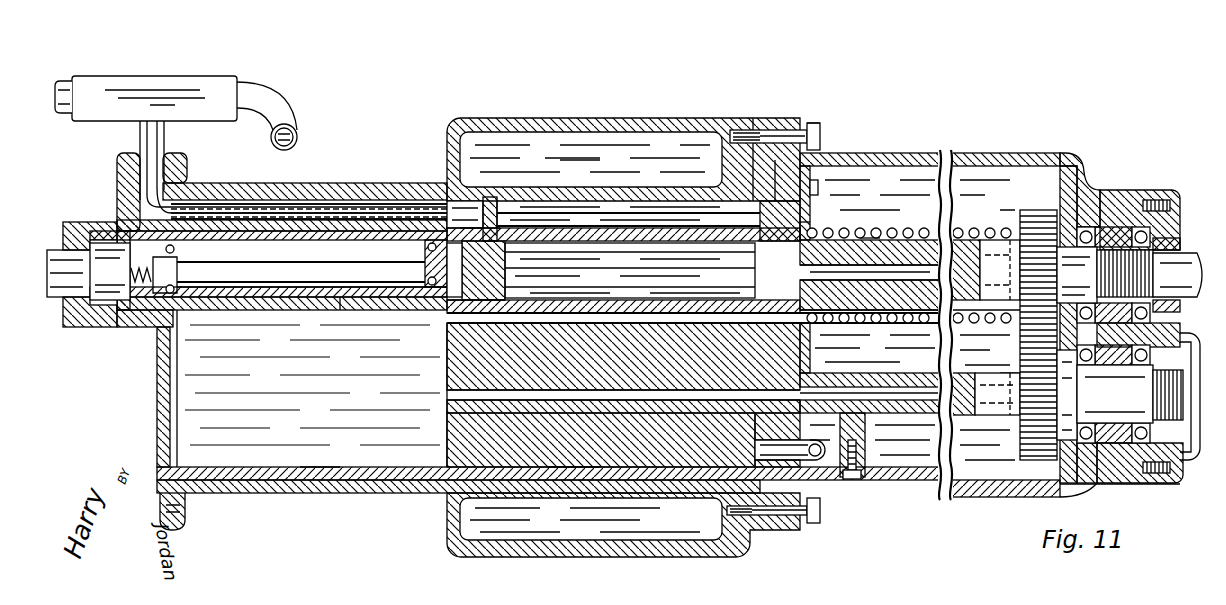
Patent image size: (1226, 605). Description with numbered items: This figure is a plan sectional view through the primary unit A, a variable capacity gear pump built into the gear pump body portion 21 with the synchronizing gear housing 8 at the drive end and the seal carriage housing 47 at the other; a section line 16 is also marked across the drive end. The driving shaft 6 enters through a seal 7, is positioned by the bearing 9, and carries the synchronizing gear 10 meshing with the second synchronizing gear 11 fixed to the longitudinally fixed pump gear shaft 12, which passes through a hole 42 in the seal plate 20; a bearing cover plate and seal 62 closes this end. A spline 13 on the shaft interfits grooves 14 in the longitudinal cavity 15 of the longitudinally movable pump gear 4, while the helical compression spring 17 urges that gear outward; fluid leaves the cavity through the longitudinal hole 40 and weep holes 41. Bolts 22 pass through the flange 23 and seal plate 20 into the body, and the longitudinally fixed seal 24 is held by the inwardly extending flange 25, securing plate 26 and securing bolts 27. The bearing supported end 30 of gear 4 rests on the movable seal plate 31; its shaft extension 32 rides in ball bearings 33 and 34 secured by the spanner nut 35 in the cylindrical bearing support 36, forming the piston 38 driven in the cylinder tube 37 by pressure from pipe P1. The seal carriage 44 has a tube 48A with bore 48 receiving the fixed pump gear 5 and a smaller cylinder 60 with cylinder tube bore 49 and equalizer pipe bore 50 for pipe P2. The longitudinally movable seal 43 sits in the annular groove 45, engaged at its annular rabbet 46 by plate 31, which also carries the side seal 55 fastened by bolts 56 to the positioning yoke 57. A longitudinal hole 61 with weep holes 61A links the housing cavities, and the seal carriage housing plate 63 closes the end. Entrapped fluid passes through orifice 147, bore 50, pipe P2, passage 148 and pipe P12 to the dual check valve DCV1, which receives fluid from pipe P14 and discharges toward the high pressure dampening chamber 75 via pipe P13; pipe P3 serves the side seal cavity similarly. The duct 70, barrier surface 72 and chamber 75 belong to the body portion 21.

The pipe P14 is at (57, 84).
The dual check valve DCV1 is at (165, 76).
The pipe P13 is at (281, 108).
The pipe P12 is at (140, 136).
The passage 148 is at (150, 204).
The pipe P1 is at (57, 232).
The equalizer pipe bore 50 is at (340, 199).
The piston 38 is at (340, 219).
The fluid relieving and replenishing pipe P2 is at (387, 201).
The smaller intersecting cylinder 60 is at (412, 201).
The orifice 147 is at (487, 200).
The concave surface 72 is at (575, 197).
The duct 70 is at (699, 165).
The seal plate 20 is at (784, 125).
The flange 23 is at (820, 124).
The bolts 22 is at (820, 136).
The synchronizing gear housing 8 is at (843, 156).
The primary unit A is at (1044, 152).
The bearing 9 is at (1090, 226).
The bearing cover plate and seal 62 is at (1179, 188).
The seal 7 is at (1185, 262).
The driving shaft 6 is at (1187, 288).
The inwardly extending flange 25 is at (757, 195).
The securing bolts 27 is at (818, 184).
The helical compression spring 17 is at (868, 226).
The spline 13 is at (905, 230).
The securing plate 26 is at (808, 219).
The movable seal plate 31 is at (505, 214).
The bearing supported end 30 is at (500, 229).
The longitudinally movable pump gear 4 is at (635, 217).
The longitudinally fixed seal 24 is at (757, 216).
The weep holes 41 is at (1000, 240).
The synchronizing gear 10 is at (1040, 212).
The spanner nut 35 is at (128, 275).
The ball type bearing 34 is at (178, 282).
The shaft extension 32 is at (308, 273).
The ball type bearing 33 is at (422, 262).
The grooves 14 is at (640, 269).
The longitudinal hole 40 is at (822, 269).
The cylindrical bearing support 36 is at (287, 293).
The cylinder tube 37 is at (323, 310).
The cylinder tube bore 49 is at (336, 298).
The longitudinal cavity 15 is at (705, 295).
The second synchronizing gear 11 is at (1020, 352).
The weep holes 61A is at (1000, 380).
The longitudinally fixed pump gear shaft 12 is at (970, 417).
The seal carriage housing plate 63 is at (157, 453).
The bore 48 is at (330, 470).
The annular rabbet 46 is at (482, 470).
The side seal 55 is at (548, 468).
The longitudinally fixed pump gear 5 is at (652, 431).
The hole 42 is at (752, 422).
The bolts 56 is at (862, 448).
The side seal positioning yoke 57 is at (863, 463).
The seal carriage housing 47 is at (335, 497).
The seal carriage 44 is at (387, 483).
The longitudinally movable seal 43 is at (450, 483).
The annular groove 45 is at (462, 480).
The tube 48A is at (317, 468).
The high pressure dampening chamber 75 is at (608, 520).
The gear pump body portion 21 is at (563, 560).
The fluid relief and replenishing pipe P3 is at (823, 503).
The longitudinal hole 61 is at (985, 516).
The section line 16 is at (1060, 98).